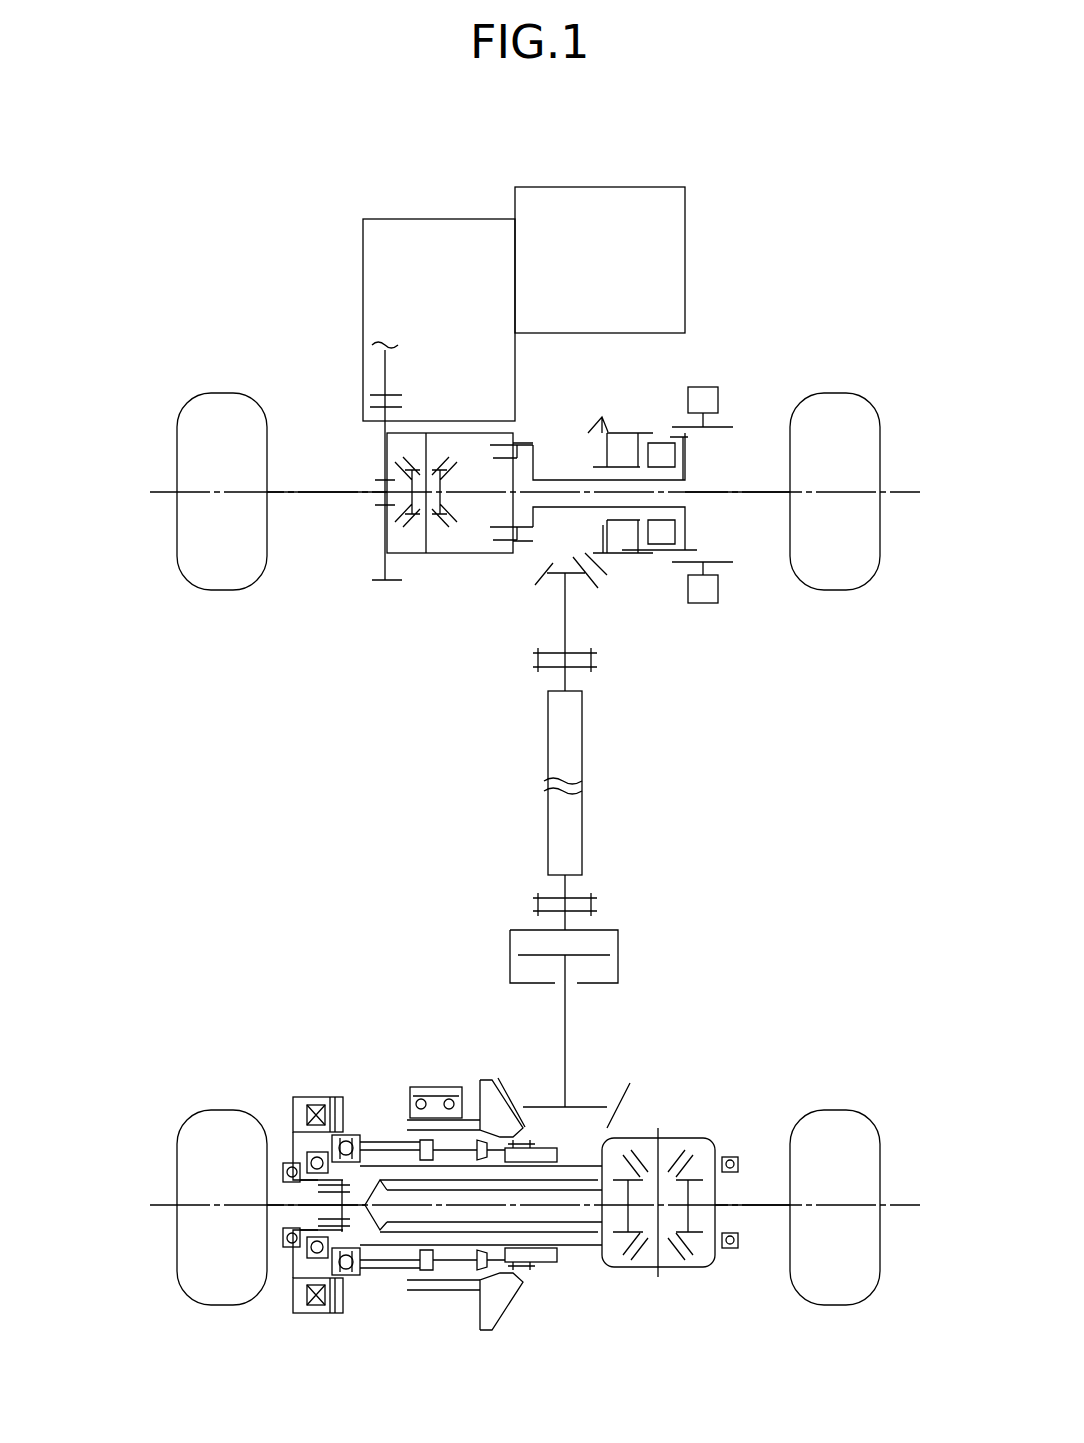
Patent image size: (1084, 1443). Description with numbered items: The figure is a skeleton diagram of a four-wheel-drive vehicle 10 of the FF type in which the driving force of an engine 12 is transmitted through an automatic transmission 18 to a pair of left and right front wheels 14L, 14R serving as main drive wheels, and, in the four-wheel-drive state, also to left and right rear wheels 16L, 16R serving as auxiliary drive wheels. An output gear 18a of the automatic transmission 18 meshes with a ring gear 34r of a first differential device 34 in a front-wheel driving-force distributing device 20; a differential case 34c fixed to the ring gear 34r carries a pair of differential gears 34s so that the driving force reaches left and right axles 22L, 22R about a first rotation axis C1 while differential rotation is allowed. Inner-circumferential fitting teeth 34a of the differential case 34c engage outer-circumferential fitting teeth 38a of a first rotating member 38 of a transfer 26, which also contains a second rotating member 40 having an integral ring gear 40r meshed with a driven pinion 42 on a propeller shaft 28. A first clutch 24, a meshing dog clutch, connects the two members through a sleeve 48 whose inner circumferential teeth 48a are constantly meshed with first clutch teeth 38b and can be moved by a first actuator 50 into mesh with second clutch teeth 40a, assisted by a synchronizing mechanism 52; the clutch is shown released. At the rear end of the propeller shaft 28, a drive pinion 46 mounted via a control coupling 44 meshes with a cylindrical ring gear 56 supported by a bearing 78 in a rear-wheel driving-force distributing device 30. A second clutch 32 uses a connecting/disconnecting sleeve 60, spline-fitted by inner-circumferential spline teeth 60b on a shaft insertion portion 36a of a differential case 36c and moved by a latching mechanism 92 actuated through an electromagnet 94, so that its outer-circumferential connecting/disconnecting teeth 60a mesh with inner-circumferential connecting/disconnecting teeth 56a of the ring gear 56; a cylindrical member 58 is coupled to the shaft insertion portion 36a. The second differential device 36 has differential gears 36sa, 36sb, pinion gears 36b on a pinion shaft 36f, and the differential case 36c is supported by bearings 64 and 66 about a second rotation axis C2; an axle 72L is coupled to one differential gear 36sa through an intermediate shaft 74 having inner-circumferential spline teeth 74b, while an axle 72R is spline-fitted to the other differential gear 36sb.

The four-wheel-drive vehicle 10 is at (752, 114).
The engine 12 is at (625, 210).
The left front wheel 14L is at (247, 410).
The right front wheel 14R is at (833, 410).
The left rear wheel 16L is at (205, 1130).
The right rear wheel 16R is at (835, 1130).
The automatic transmission 18 is at (438, 240).
The output gear 18a is at (378, 395).
The front-wheel driving-force distributing device 20 is at (427, 683).
The left axle 22L is at (335, 500).
The right axle 22R is at (758, 500).
The first clutch 24 is at (656, 616).
The transfer 26 is at (636, 642).
The propeller shaft 28 is at (578, 806).
The rear-wheel driving-force distributing device 30 is at (801, 1031).
The second clutch 32 is at (441, 1306).
The first differential device 34 is at (409, 545).
The inner-circumferential fitting teeth 34a is at (535, 447).
The differential case 34c is at (445, 553).
The ring gear 34r is at (385, 582).
The differential gears 34s is at (395, 478).
The second differential device 36 is at (714, 1081).
The shaft insertion portion 36a is at (606, 1285).
The pinion gears 36b is at (670, 1160).
The differential case 36c is at (628, 1278).
The pinion shaft 36f is at (662, 1278).
The differential gear 36sa is at (618, 1165).
The differential gear 36sb is at (696, 1250).
The first rotating member 38 is at (562, 477).
The outer-circumferential fitting teeth 38a is at (493, 450).
The first clutch teeth 38b is at (703, 432).
The second rotating member 40 is at (605, 499).
The second clutch teeth 40a is at (632, 437).
The ring gear 40r is at (592, 567).
The driven pinion 42 is at (548, 618).
The control coupling 44 is at (612, 930).
The drive pinion 46 is at (542, 1107).
The sleeve 48 is at (720, 425).
The inner circumferential teeth 48a is at (720, 433).
The first actuator 50 is at (705, 395).
The synchronizing mechanism 52 is at (660, 550).
The ring gear 56 is at (483, 1092).
The inner-circumferential connecting/disconnecting teeth 56a is at (505, 1287).
The cylindrical member 58 is at (364, 1276).
The connecting/disconnecting sleeve 60 is at (484, 1229).
The outer-circumferential connecting/disconnecting teeth 60a is at (540, 1262).
The inner-circumferential spline teeth 60b is at (545, 1150).
The bearing 64 is at (288, 1186).
The bearing 66 is at (731, 1157).
The axle 72L is at (270, 1210).
The axle 72R is at (786, 1208).
The intermediate shaft 74 is at (503, 1190).
The inner-circumferential spline teeth 74b is at (368, 1195).
The bearing 78 is at (430, 1087).
The latching mechanism 92 is at (397, 1290).
The electromagnet 94 is at (313, 1312).
The first rotation axis C1 is at (150, 491).
The second rotation axis C2 is at (150, 1204).